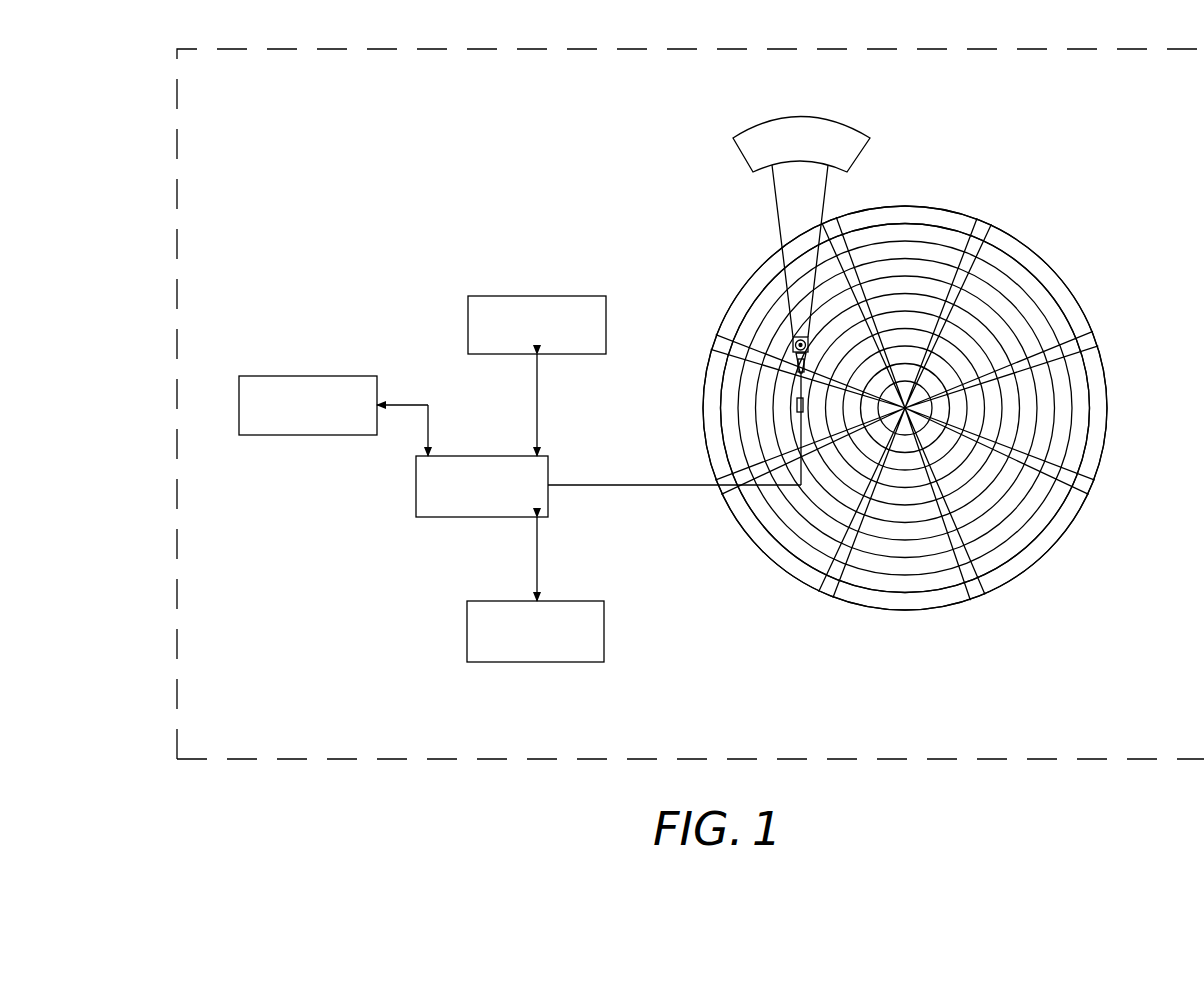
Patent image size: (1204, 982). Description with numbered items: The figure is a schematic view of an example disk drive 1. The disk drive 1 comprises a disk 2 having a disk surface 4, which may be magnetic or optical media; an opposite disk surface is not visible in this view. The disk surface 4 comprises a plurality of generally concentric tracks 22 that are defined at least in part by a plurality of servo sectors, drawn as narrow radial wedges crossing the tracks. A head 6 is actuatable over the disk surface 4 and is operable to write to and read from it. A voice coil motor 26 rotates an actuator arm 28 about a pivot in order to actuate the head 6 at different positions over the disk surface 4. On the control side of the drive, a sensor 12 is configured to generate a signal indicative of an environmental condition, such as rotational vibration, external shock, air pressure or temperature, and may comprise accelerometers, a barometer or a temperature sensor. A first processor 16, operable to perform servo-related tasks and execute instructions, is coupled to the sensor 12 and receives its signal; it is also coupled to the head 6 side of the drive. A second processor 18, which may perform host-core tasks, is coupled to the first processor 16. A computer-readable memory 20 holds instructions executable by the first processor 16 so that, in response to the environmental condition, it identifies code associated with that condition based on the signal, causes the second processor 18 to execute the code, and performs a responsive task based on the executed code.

The disk drive 1 is at (388, 760).
The disk 2 is at (1056, 263).
The disk surface 4 is at (1100, 430).
The head 6 is at (794, 408).
The sensor 12 is at (604, 625).
The first processor 16 is at (445, 518).
The second processor 18 is at (497, 356).
The computer-readable memory 20 is at (307, 436).
The tracks 22 is at (905, 236).
The voice coil motor 26 is at (742, 155).
The actuator arm 28 is at (784, 226).